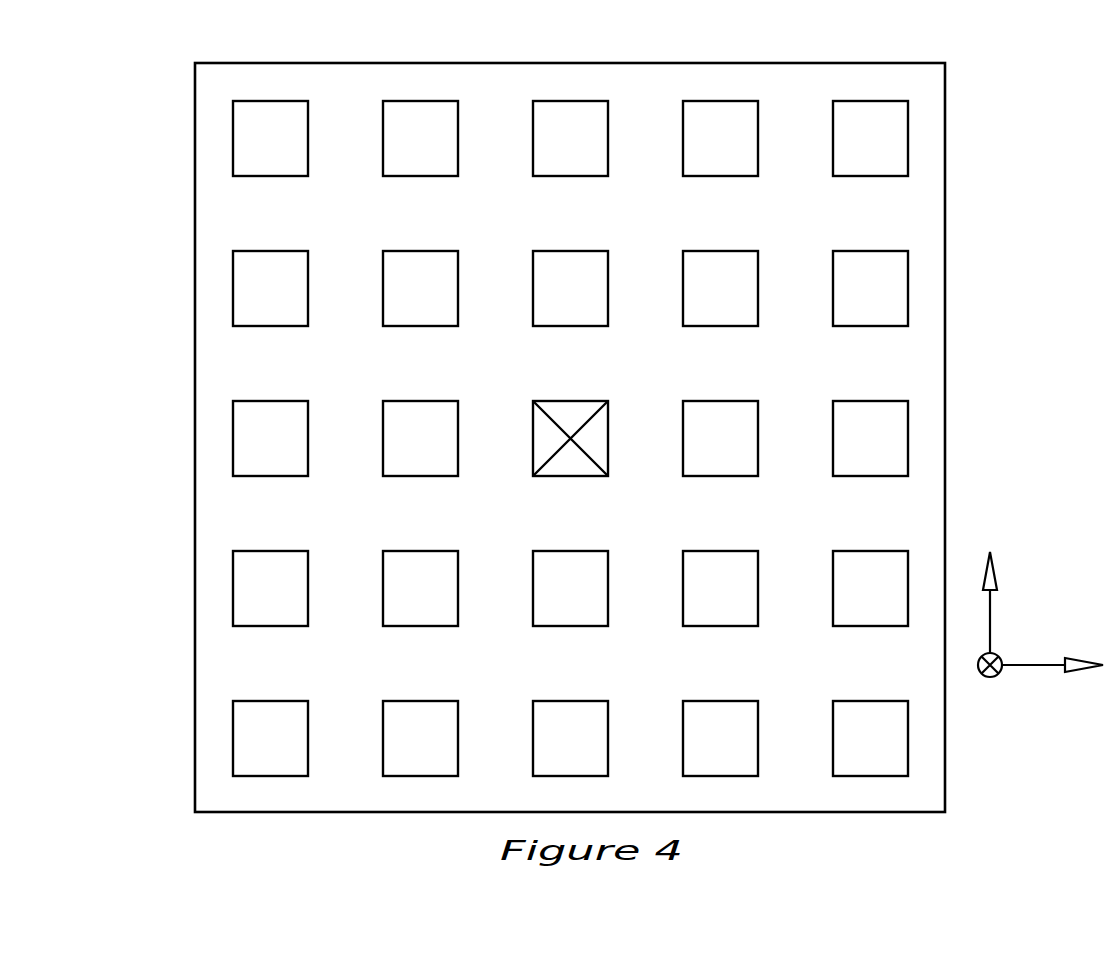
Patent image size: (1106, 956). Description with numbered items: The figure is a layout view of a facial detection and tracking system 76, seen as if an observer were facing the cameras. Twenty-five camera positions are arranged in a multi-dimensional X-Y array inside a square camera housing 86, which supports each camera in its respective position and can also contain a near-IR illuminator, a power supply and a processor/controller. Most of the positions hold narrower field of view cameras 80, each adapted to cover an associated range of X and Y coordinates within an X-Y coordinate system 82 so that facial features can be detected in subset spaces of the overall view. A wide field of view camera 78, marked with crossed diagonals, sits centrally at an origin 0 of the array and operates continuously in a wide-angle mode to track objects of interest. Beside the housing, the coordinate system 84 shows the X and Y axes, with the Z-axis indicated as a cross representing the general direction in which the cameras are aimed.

The facial detection and tracking system 76 is at (610, 437).
The wide field of view camera 78 is at (605, 443).
The origin 0 is at (570, 440).
The narrower field of view cameras 80 is at (233, 140).
The X-Y coordinate system 82 is at (990, 618).
The coordinate system 84 is at (991, 677).
The camera housing 86 is at (945, 285).